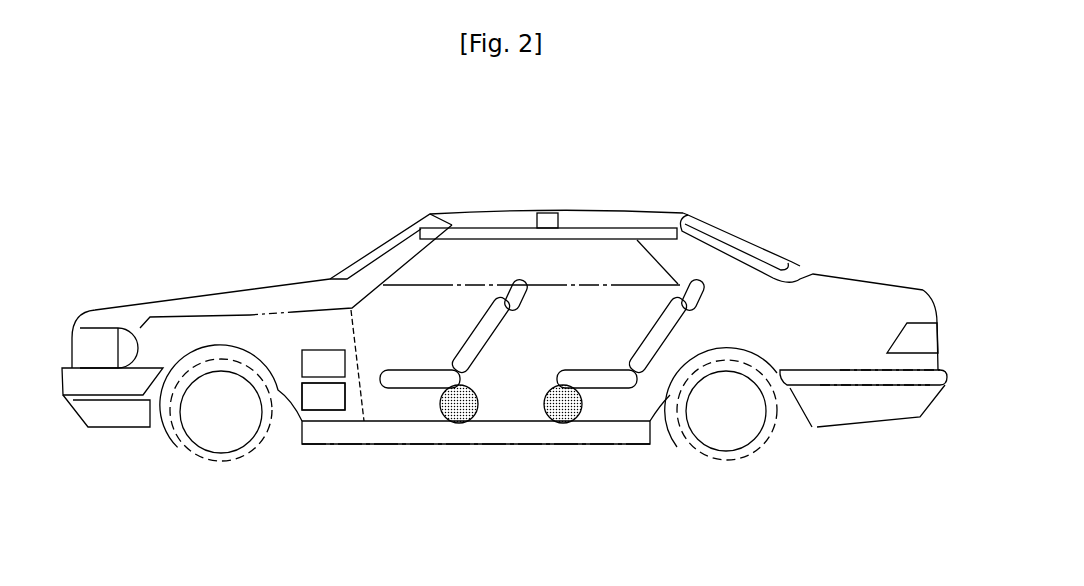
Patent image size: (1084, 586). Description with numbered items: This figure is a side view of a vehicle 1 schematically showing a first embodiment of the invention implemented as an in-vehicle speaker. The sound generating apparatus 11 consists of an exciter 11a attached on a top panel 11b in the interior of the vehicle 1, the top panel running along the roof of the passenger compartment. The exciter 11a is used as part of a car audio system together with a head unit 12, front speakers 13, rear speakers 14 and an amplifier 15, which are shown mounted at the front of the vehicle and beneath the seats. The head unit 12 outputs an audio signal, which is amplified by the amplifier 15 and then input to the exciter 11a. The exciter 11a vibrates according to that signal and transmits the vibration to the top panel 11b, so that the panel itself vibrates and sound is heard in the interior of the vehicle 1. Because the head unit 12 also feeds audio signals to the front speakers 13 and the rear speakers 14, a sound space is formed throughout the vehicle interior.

The vehicle 1 is at (853, 405).
The sound generating apparatus 11 is at (570, 191).
The exciter 11a is at (553, 213).
The top panel 11b is at (664, 226).
The head unit 12 is at (317, 350).
The front speakers 13 is at (450, 423).
The rear speakers 14 is at (573, 239).
The amplifier 15 is at (325, 410).